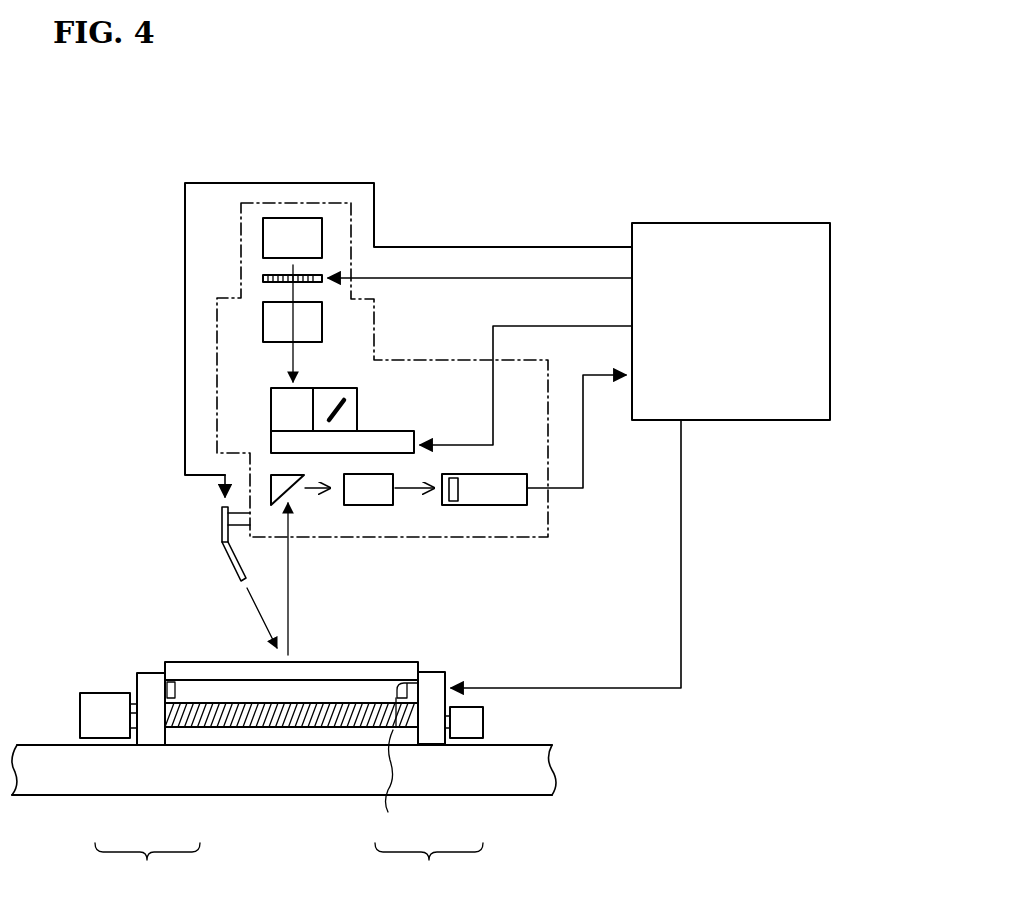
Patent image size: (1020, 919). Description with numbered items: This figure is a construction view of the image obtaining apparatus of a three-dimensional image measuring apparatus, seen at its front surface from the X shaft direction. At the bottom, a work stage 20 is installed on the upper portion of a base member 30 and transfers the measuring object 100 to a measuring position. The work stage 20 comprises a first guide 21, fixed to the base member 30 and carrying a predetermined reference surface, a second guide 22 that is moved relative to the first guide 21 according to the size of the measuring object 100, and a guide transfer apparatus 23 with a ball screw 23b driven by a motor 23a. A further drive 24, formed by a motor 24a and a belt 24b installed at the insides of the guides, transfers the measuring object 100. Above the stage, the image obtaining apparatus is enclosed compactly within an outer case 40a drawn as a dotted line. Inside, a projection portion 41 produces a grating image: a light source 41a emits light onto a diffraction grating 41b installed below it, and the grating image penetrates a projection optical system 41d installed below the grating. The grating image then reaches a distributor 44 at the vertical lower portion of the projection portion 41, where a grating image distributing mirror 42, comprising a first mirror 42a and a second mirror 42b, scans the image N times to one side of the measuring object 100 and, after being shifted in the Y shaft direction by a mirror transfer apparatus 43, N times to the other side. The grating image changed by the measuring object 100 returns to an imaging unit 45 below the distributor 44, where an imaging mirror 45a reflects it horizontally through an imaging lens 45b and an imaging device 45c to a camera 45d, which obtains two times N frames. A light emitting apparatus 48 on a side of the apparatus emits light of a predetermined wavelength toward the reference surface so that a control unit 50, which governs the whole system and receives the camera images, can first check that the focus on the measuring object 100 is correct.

The work stage 20 is at (284, 701).
The first guide 21 is at (140, 681).
The second guide 22 is at (440, 672).
The guide transfer apparatus 23 is at (147, 870).
The motor 23a is at (103, 738).
The ball screw 23b is at (193, 728).
The second driving unit 24 is at (429, 870).
The motor 24a is at (392, 784).
The belt 24b is at (467, 738).
The base member 30 is at (282, 783).
The outer case 40a is at (374, 350).
The projection portion 41 is at (191, 287).
The light source 41a is at (268, 228).
The diffraction grating 41b is at (263, 275).
The projection optical system 41d is at (268, 324).
The grating image distributing mirror 42 is at (209, 400).
The first mirror 42a is at (275, 398).
The second mirror 42b is at (318, 420).
The mirror transfer apparatus 43 is at (275, 443).
The distributor 44 is at (209, 427).
The imaging unit 45 is at (406, 553).
The imaging mirror 45a is at (290, 490).
The imaging lens 45b is at (370, 505).
The imaging device 45c is at (457, 528).
The camera 45d is at (505, 505).
The light emitting apparatus 48 is at (227, 560).
The control unit 50 is at (830, 360).
The measuring object 100 is at (347, 663).